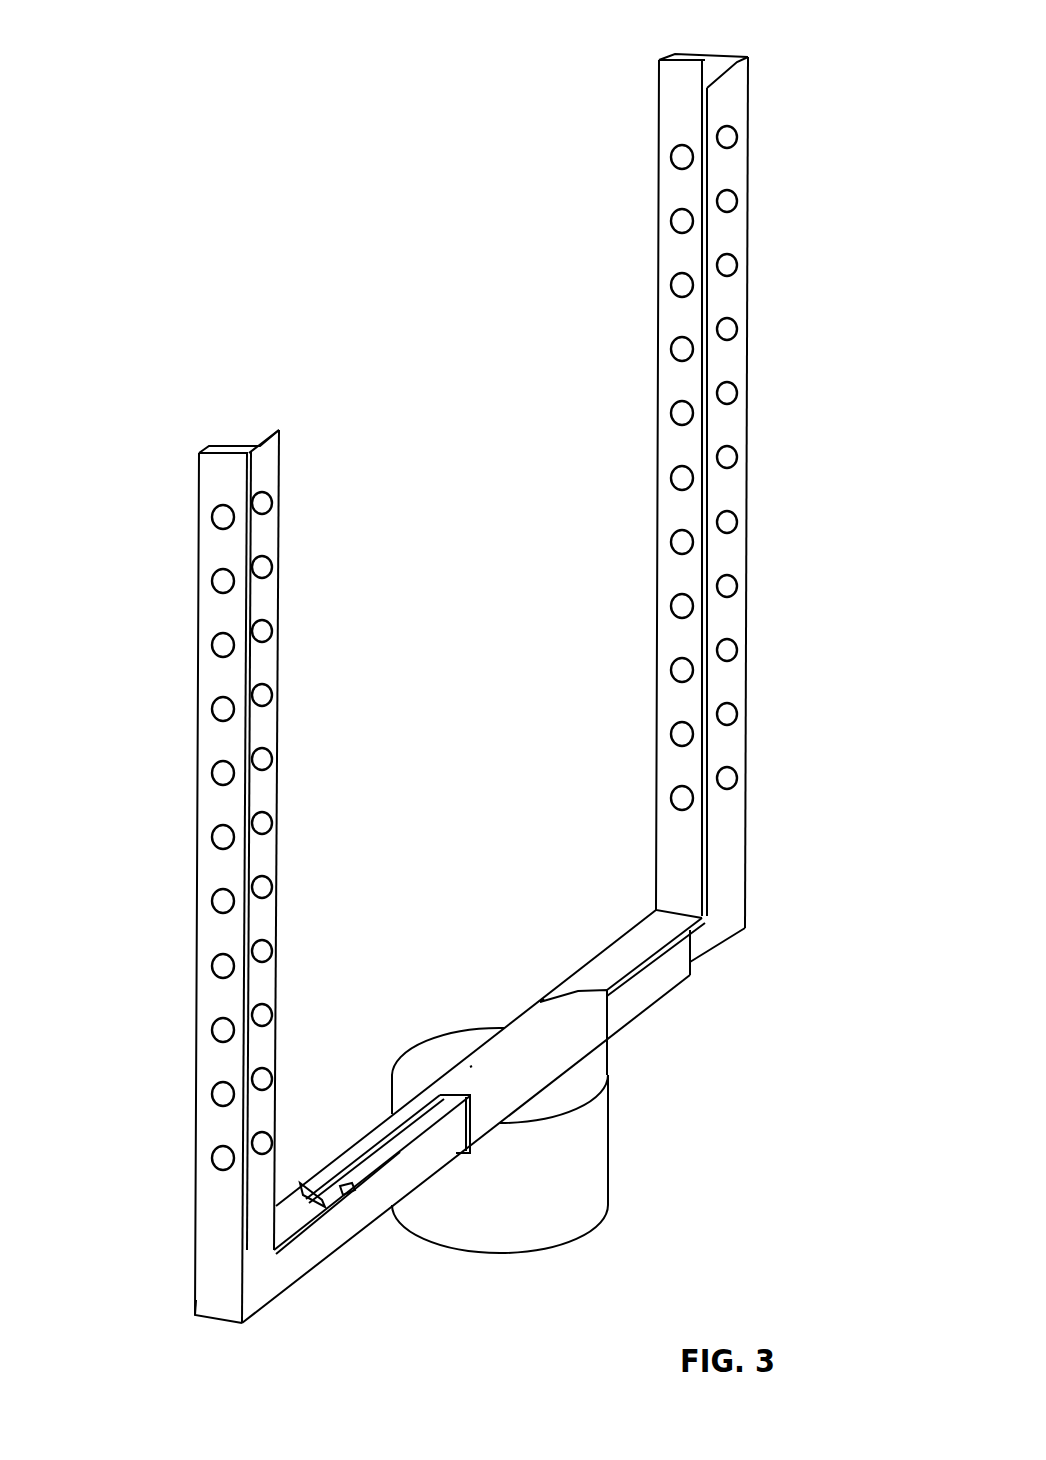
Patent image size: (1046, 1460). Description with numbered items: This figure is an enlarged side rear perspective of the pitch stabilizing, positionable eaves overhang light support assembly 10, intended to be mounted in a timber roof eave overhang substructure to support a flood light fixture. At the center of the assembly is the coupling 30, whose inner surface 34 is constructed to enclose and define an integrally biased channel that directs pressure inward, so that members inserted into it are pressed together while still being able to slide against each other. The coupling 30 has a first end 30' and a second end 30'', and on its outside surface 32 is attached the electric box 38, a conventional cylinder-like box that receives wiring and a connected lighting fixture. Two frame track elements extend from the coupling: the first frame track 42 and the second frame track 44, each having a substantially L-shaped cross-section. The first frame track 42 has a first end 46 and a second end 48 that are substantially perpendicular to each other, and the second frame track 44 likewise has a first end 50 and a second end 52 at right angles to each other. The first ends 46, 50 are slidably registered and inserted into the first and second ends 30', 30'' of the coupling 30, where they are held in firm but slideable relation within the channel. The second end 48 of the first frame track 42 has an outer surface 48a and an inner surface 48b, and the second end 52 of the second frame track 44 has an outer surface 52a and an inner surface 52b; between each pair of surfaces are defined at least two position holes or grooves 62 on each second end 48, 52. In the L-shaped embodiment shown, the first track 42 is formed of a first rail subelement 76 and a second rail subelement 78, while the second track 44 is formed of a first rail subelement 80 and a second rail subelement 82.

The light support assembly 10 is at (406, 505).
The coupling 30 is at (598, 978).
The first end of the coupling 30' is at (579, 927).
The second end of the coupling 30'' is at (508, 1059).
The outside surface of the coupling 32 is at (577, 1042).
The inner surface of the coupling 34 is at (432, 1139).
The electric box 38 is at (605, 1208).
The first frame track 42 is at (748, 842).
The second frame track 44 is at (197, 1297).
The first end of the first frame track 46 is at (312, 1180).
The second end of the first frame track 48 is at (678, 105).
The outer surface of the second end of the first frame track 48a is at (720, 56).
The inner surface of the second end of the first frame track 48b is at (668, 77).
The first end of the second frame track 50 is at (697, 953).
The second end of the second frame track 52 is at (213, 495).
The outer surface of the second end of the second frame track 52a is at (208, 456).
The inner surface of the second end of the second frame track 52b is at (234, 445).
The position holes 62 is at (672, 232).
The first rail subelement 76 is at (675, 377).
The second rail subelement 78 is at (730, 368).
The first rail subelement 80 is at (213, 803).
The second rail subelement 82 is at (260, 732).